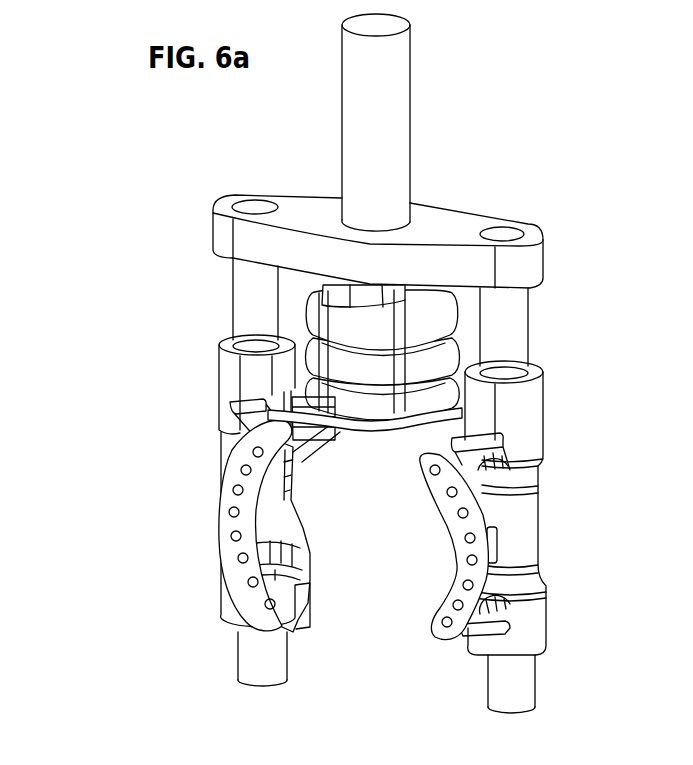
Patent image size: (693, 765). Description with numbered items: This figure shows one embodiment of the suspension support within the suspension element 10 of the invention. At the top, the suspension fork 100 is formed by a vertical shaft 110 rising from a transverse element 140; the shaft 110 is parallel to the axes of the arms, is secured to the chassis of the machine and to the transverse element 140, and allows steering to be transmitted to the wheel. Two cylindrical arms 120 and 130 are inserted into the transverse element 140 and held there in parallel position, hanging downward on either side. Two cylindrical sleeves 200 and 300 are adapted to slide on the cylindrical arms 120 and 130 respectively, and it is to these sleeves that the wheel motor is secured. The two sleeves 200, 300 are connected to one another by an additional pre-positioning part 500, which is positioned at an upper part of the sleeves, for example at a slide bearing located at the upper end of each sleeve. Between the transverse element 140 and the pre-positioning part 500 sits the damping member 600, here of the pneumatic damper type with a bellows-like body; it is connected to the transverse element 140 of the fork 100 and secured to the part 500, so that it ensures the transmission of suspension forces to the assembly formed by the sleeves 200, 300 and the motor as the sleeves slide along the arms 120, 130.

The suspension element 10 is at (608, 283).
The suspension fork 100 is at (206, 238).
The shaft 110 is at (397, 115).
The cylindrical arm 120 is at (249, 305).
The cylindrical arm 130 is at (512, 328).
The transverse element 140 is at (448, 230).
The cylindrical sleeve 200 is at (206, 393).
The cylindrical sleeve 300 is at (552, 512).
The pre-positioning part 500 is at (405, 423).
The damping member 600 is at (358, 330).